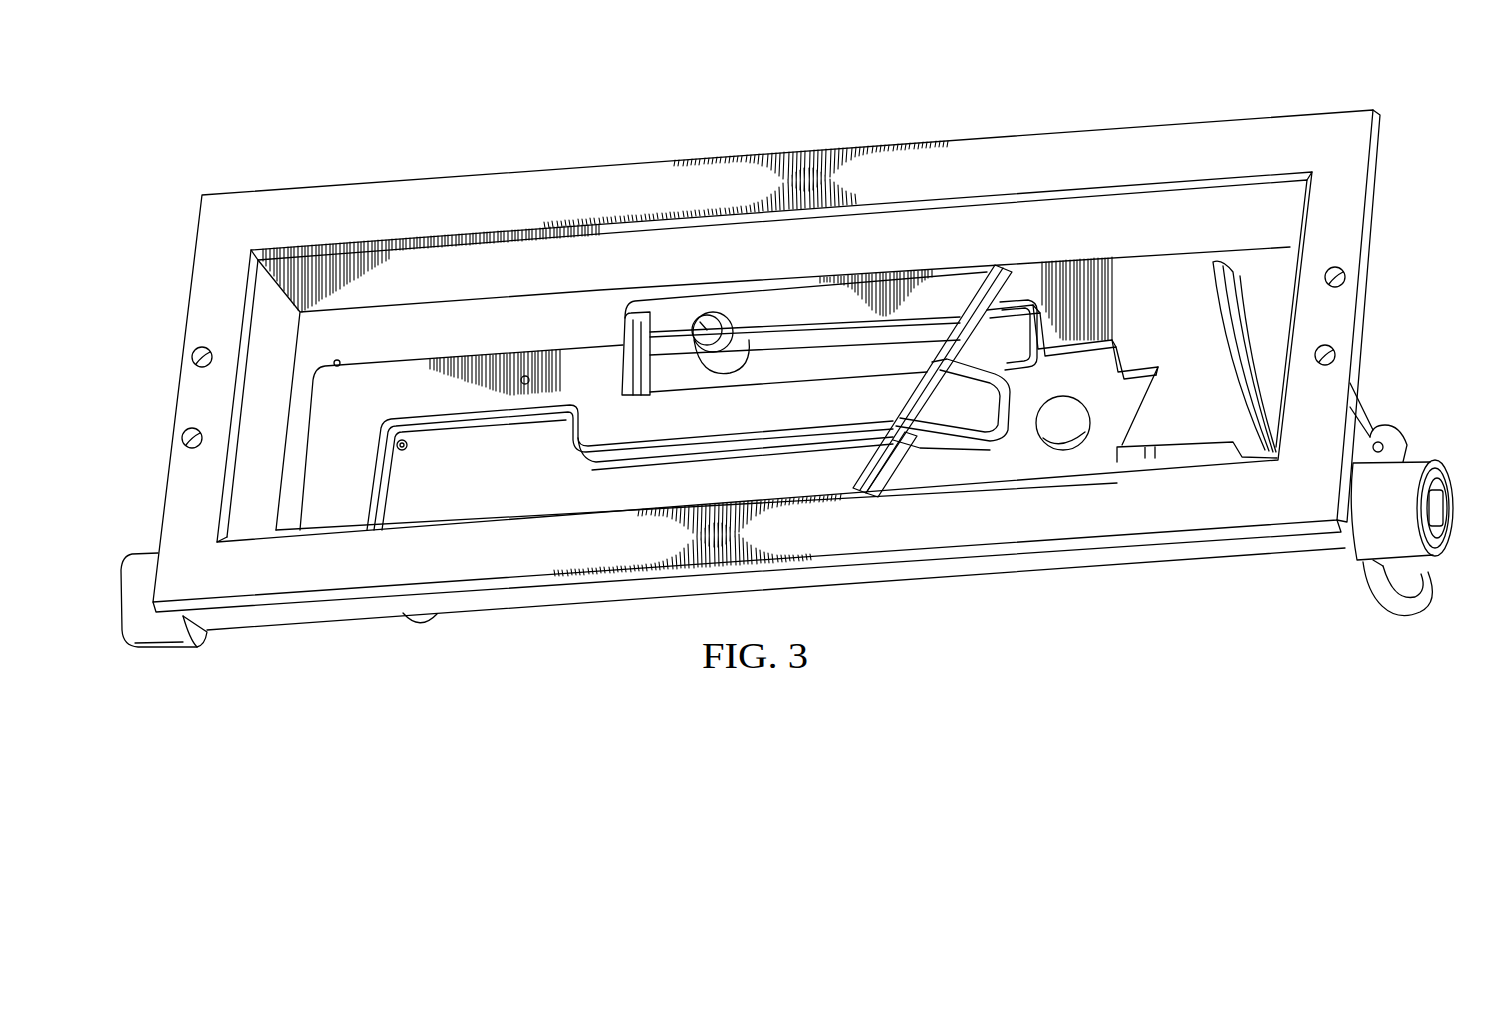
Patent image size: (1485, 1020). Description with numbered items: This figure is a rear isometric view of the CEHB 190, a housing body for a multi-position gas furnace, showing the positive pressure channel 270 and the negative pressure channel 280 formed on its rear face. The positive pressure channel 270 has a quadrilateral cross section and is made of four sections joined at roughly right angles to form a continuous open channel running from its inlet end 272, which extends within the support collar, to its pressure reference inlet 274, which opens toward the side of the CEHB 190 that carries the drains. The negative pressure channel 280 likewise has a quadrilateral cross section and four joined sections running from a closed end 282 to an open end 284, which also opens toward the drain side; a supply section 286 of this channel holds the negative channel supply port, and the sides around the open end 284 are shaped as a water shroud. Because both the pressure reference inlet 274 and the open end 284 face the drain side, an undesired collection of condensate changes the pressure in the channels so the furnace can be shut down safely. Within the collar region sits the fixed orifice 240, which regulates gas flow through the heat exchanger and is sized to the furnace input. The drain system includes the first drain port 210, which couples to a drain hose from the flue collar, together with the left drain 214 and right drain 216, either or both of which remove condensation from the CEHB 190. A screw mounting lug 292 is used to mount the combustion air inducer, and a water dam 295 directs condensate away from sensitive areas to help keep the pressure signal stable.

The CEHB 190 is at (456, 115).
The positive pressure channel 270 is at (547, 393).
The pressure reference inlet 274 is at (393, 525).
The closed end 282 is at (620, 312).
The screw mounting lug 292 is at (701, 313).
The water dam 295 is at (875, 483).
The inlet end 272 is at (953, 400).
The fixed orifice 240 is at (1053, 450).
The supply section 286 is at (1152, 277).
The negative pressure channel 280 is at (1247, 294).
The open end 284 is at (1197, 443).
The left drain 214 is at (1450, 547).
The first drain port 210 is at (1397, 610).
The right drain 216 is at (170, 648).